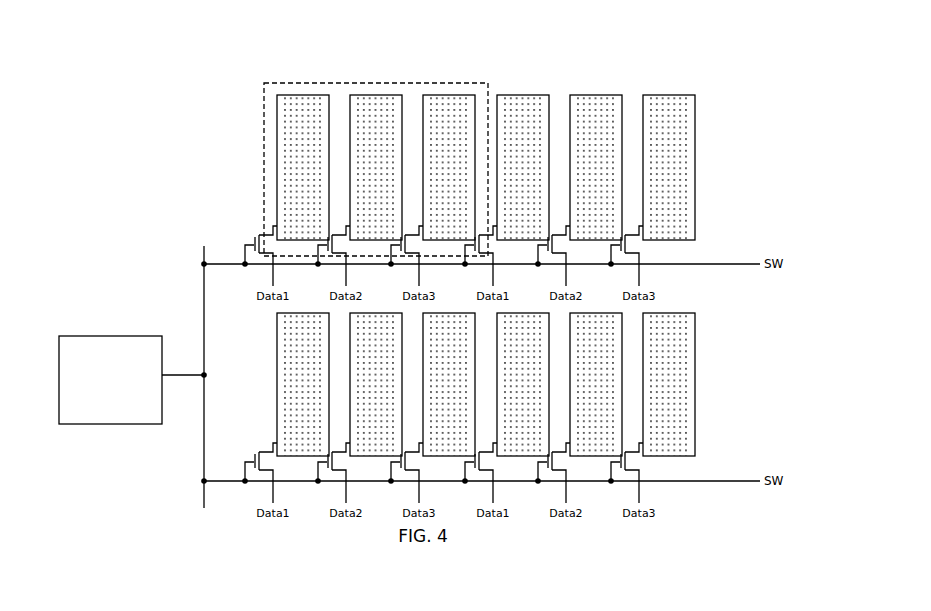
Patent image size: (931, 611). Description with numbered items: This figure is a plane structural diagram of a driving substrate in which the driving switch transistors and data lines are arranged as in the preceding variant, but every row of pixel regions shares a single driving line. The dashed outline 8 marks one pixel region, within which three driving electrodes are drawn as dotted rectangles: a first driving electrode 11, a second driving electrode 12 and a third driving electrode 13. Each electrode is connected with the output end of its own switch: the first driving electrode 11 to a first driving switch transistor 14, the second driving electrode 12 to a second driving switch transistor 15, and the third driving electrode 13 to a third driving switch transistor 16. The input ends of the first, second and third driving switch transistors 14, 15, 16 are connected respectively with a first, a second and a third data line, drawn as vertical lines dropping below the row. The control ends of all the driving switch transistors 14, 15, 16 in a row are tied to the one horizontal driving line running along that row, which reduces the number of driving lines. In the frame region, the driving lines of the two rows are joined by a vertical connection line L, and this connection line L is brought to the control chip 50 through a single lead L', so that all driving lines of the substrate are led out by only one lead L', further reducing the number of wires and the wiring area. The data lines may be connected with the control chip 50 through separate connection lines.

The pixel unit group 8 is at (488, 83).
The first driving electrode 11 is at (302, 113).
The second driving electrode 12 is at (375, 113).
The third driving electrode 13 is at (447, 113).
The first driving switch transistor 14 is at (262, 242).
The second driving switch transistor 15 is at (336, 236).
The third driving switch transistor 16 is at (409, 236).
The control chip 50 is at (110, 380).
The connection line L is at (203, 370).
The lead L' is at (182, 334).